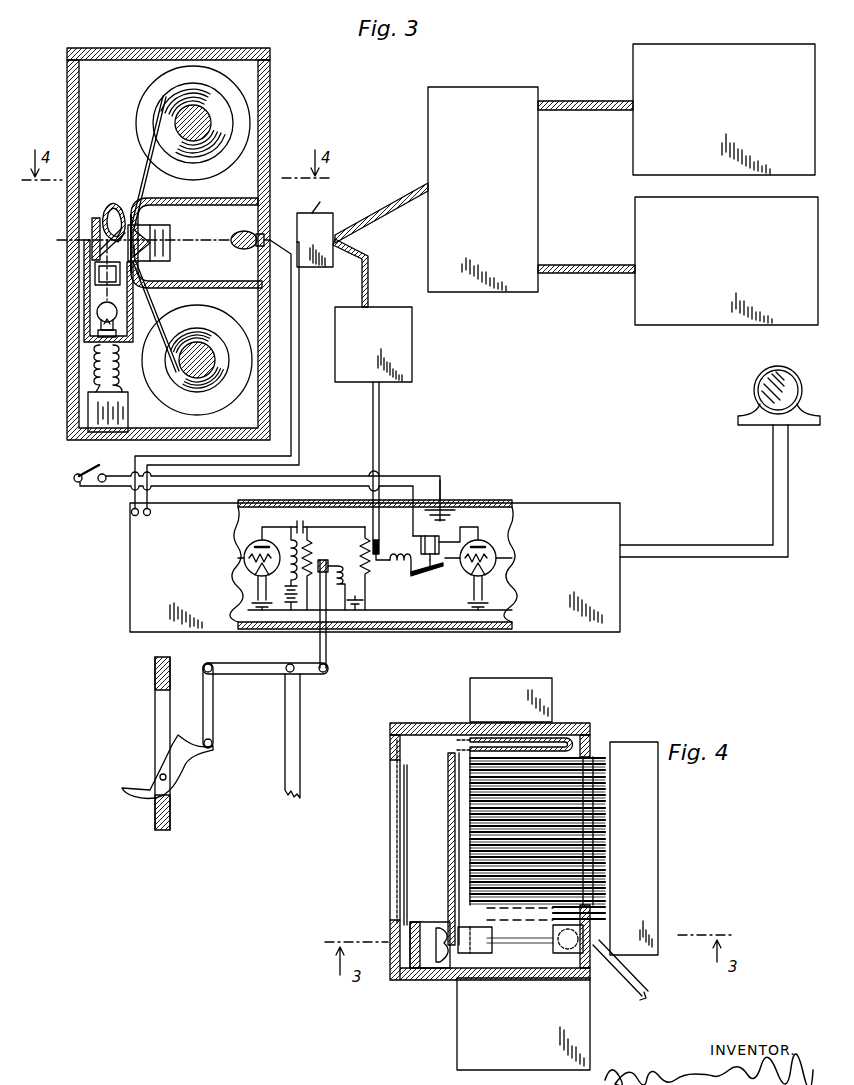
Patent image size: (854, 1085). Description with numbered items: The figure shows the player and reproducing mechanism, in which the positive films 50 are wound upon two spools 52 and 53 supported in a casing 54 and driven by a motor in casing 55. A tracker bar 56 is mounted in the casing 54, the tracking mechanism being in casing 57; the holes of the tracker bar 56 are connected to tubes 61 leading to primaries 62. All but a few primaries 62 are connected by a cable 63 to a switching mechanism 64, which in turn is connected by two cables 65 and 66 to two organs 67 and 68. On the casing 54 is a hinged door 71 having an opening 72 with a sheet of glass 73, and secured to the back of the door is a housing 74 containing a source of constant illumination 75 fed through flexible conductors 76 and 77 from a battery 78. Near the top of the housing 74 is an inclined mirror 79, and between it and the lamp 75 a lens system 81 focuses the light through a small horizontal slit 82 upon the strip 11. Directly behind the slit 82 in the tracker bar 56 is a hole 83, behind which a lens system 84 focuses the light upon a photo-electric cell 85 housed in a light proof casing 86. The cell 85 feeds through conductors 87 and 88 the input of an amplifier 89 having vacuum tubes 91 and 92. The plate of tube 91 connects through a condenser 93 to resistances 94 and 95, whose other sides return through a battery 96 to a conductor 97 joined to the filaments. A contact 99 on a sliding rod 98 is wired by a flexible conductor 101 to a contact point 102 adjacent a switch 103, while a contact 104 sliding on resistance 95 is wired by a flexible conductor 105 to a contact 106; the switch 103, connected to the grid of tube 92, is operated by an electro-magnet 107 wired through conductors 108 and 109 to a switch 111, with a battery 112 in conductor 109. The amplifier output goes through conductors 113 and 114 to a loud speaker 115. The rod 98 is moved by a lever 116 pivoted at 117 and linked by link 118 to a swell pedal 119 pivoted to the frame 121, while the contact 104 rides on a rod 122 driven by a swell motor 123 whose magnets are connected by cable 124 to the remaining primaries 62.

In FIG. 3, the strip 11 is at (138, 294).
In FIG. 4, the strip 11 is at (505, 946).
In FIG. 3, the positive films 50 is at (140, 162).
In FIG. 4, the positive films 50 is at (449, 845).
In FIG. 3, the spool 52 is at (205, 111).
In FIG. 3, the spool 53 is at (213, 337).
In FIG. 4, the spool 53 is at (572, 953).
In FIG. 3, the casing 54 is at (150, 48).
In FIG. 4, the casing 54 is at (426, 725).
In FIG. 4, the casing 55 is at (458, 1050).
In FIG. 3, the tracker bar 56 is at (156, 197).
In FIG. 4, the tracker bar 56 is at (461, 873).
In FIG. 4, the casing 57 is at (553, 700).
In FIG. 4, the tubes 61 is at (587, 752).
In FIG. 3, the primaries 62 is at (317, 228).
In FIG. 4, the primaries 62 is at (651, 797).
In FIG. 3, the cable 63 is at (375, 214).
In FIG. 3, the switching mechanism 64 is at (534, 238).
In FIG. 3, the cable 65 is at (573, 102).
In FIG. 3, the cable 66 is at (594, 265).
In FIG. 3, the organ 67 is at (702, 44).
In FIG. 3, the organ 68 is at (637, 314).
In FIG. 3, the hinged door 71 is at (67, 92).
In FIG. 4, the hinged door 71 is at (392, 863).
In FIG. 4, the opening 72 is at (403, 770).
In FIG. 4, the sheet of glass 73 is at (405, 821).
In FIG. 3, the housing 74 is at (88, 330).
In FIG. 4, the housing 74 is at (427, 932).
In FIG. 3, the source of constant illumination 75 is at (97, 313).
In FIG. 3, the flexible conductor 76 is at (93, 372).
In FIG. 3, the flexible conductor 77 is at (115, 384).
In FIG. 3, the battery 78 is at (88, 425).
In FIG. 3, the inclined mirror 79 is at (92, 240).
In FIG. 3, the lens system 81 is at (95, 275).
In FIG. 3, the slit 82 is at (103, 215).
In FIG. 4, the slit 82 is at (435, 953).
In FIG. 3, the hole 83 is at (160, 226).
In FIG. 3, the lens system 84 is at (158, 262).
In FIG. 3, the photo-electric cell 85 is at (240, 249).
In FIG. 4, the photo-electric cell 85 is at (593, 973).
In FIG. 3, the light proof casing 86 is at (236, 203).
In FIG. 4, the light proof casing 86 is at (480, 955).
In FIG. 3, the conductor 87 is at (292, 423).
In FIG. 3, the conductor 88 is at (300, 450).
In FIG. 3, the amplifier 89 is at (129, 540).
In FIG. 3, the vacuum tube 91 is at (246, 550).
In FIG. 3, the vacuum tube 92 is at (497, 553).
In FIG. 3, the condenser 93 is at (306, 525).
In FIG. 3, the resistance 94 is at (299, 545).
In FIG. 3, the resistance 95 is at (363, 556).
In FIG. 3, the battery 96 is at (364, 605).
In FIG. 3, the conductor 97 is at (418, 611).
In FIG. 3, the sliding rod 98 is at (329, 655).
In FIG. 3, the contact 99 is at (310, 562).
In FIG. 3, the flexible conductor 101 is at (340, 572).
In FIG. 3, the contact point 102 is at (398, 609).
In FIG. 3, the switch 103 is at (424, 570).
In FIG. 3, the contact 104 is at (378, 540).
In FIG. 3, the flexible conductor 105 is at (396, 561).
In FIG. 3, the contact 106 is at (410, 573).
In FIG. 3, the electro-magnet 107 is at (440, 545).
In FIG. 3, the conductor 108 is at (392, 480).
In FIG. 3, the conductor 109 is at (442, 481).
In FIG. 3, the switch 111 is at (77, 473).
In FIG. 3, the battery 112 is at (456, 508).
In FIG. 3, the conductor 113 is at (651, 546).
In FIG. 3, the conductor 114 is at (701, 556).
In FIG. 3, the loud speaker 115 is at (752, 406).
In FIG. 3, the lever 116 is at (262, 672).
In FIG. 3, the pivot 117 is at (300, 735).
In FIG. 3, the link 118 is at (214, 725).
In FIG. 3, the swell pedal 119 is at (144, 774).
In FIG. 3, the frame of the player mechanism 121 is at (156, 712).
In FIG. 3, the rod 122 is at (380, 426).
In FIG. 3, the swell motor 123 is at (408, 362).
In FIG. 3, the cable 124 is at (371, 282).